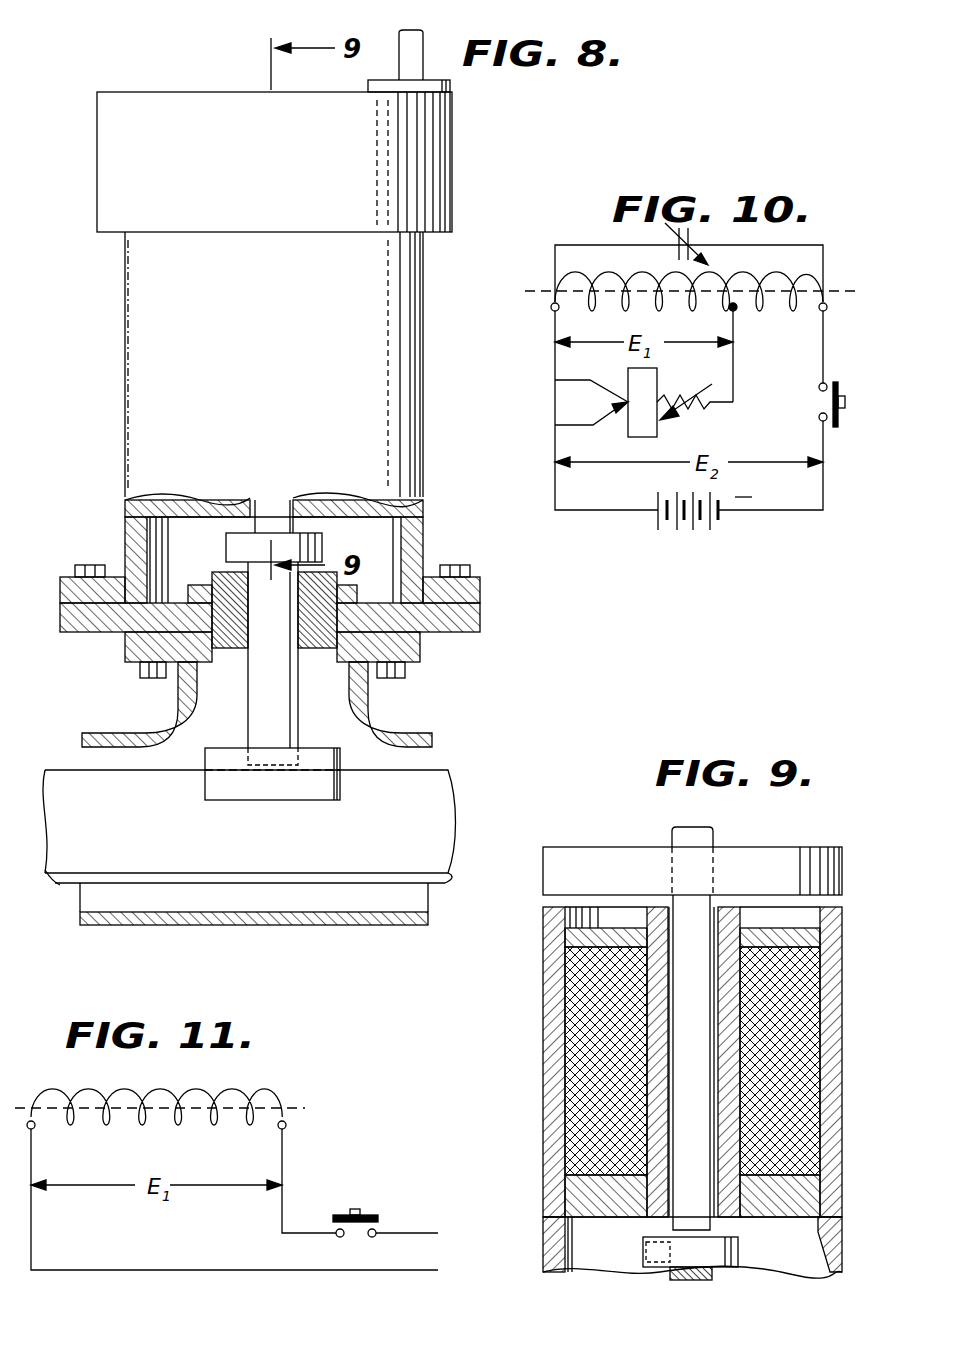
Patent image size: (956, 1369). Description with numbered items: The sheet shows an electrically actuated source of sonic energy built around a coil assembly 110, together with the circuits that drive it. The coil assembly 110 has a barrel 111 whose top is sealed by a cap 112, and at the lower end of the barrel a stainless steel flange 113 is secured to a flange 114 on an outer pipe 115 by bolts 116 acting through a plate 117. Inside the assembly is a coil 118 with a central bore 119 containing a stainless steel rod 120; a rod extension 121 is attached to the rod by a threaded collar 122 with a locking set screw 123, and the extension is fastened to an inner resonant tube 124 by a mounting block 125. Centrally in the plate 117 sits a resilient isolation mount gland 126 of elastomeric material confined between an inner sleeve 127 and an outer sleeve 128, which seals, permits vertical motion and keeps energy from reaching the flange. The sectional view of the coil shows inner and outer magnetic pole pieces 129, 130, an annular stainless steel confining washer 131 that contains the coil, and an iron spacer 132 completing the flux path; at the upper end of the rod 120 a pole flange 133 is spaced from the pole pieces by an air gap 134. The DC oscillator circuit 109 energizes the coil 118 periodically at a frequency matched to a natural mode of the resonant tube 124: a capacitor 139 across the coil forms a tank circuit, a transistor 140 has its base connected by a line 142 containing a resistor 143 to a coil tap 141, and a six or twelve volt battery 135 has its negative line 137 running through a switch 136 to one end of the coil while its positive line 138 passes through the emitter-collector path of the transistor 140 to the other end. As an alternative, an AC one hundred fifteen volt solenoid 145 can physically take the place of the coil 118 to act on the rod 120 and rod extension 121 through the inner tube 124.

In FIG. 10, the oscillator circuit 109 is at (823, 270).
In FIG. 8, the coil assembly 110 is at (235, 273).
In FIG. 9, the coil assembly 110 is at (680, 1070).
In FIG. 8, the barrel 111 is at (145, 362).
In FIG. 8, the cap 112 is at (97, 103).
In FIG. 8, the stainless steel flange 113 is at (68, 590).
In FIG. 9, the stainless steel flange 113 is at (843, 1252).
In FIG. 8, the flange 114 is at (140, 650).
In FIG. 8, the outer pipe 115 is at (392, 747).
In FIG. 8, the bolts 116 is at (458, 568).
In FIG. 8, the plate 117 is at (470, 625).
In FIG. 9, the coil 118 is at (795, 995).
In FIG. 8, the central bore 119 is at (292, 503).
In FIG. 9, the central bore 119 is at (712, 1087).
In FIG. 8, the stainless steel rod 120 is at (266, 506).
In FIG. 9, the stainless steel rod 120 is at (693, 1152).
In FIG. 8, the rod extension 121 is at (258, 690).
In FIG. 9, the rod extension 121 is at (672, 1282).
In FIG. 8, the threaded collar 122 is at (228, 548).
In FIG. 9, the threaded collar 122 is at (738, 1248).
In FIG. 9, the locking set screw 123 is at (640, 1250).
In FIG. 8, the inner resonant tube 124 is at (397, 790).
In FIG. 8, the mounting block 125 is at (275, 790).
In FIG. 8, the resilient isolation mount gland 126 is at (318, 640).
In FIG. 8, the inner sleeve 127 is at (337, 612).
In FIG. 8, the outer sleeve 128 is at (212, 612).
In FIG. 9, the inner magnetic pole piece 129 is at (652, 1108).
In FIG. 9, the outer magnetic pole piece 130 is at (550, 1195).
In FIG. 9, the annular confining washer 131 is at (808, 938).
In FIG. 9, the spacer 132 is at (805, 1197).
In FIG. 9, the pole flange 133 is at (605, 855).
In FIG. 9, the air gap 134 is at (545, 903).
In FIG. 10, the battery 135 is at (658, 520).
In FIG. 10, the switch 136 is at (840, 390).
In FIG. 11, the switch 136 is at (366, 1212).
In FIG. 10, the negative line 137 is at (823, 495).
In FIG. 10, the positive line 138 is at (555, 485).
In FIG. 10, the capacitor 139 is at (679, 243).
In FIG. 10, the transistor 140 is at (657, 430).
In FIG. 10, the coil tap 141 is at (737, 310).
In FIG. 10, the line 142 is at (730, 403).
In FIG. 10, the resistor 143 is at (706, 386).
In FIG. 11, the AC solenoid 145 is at (262, 1092).